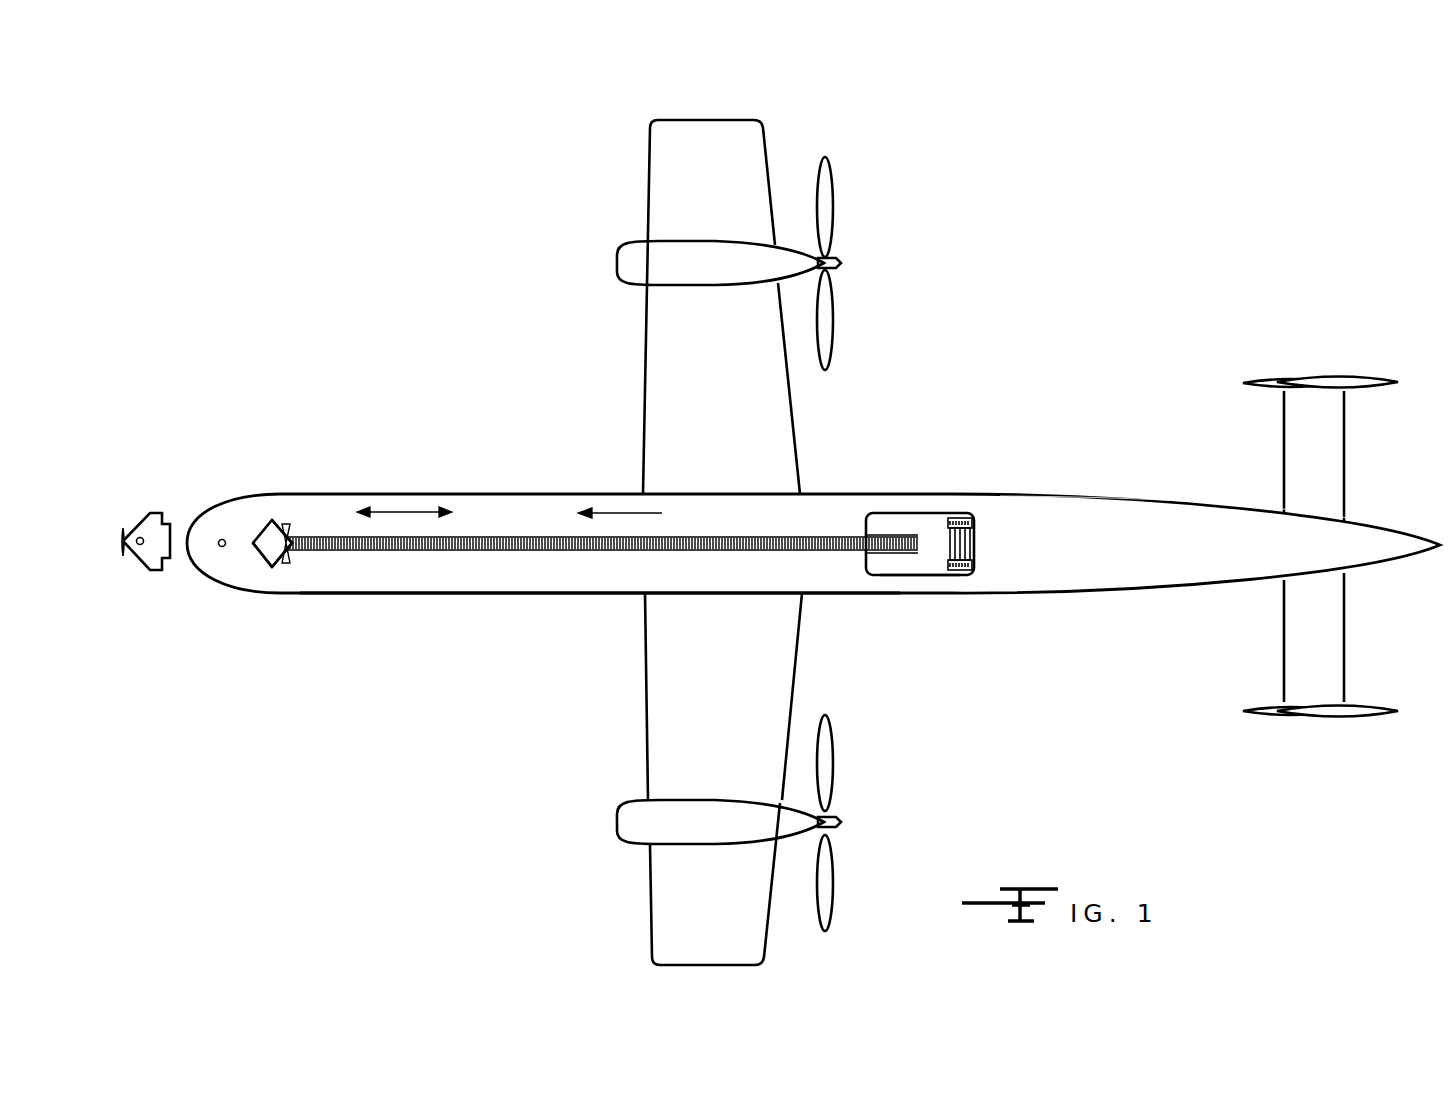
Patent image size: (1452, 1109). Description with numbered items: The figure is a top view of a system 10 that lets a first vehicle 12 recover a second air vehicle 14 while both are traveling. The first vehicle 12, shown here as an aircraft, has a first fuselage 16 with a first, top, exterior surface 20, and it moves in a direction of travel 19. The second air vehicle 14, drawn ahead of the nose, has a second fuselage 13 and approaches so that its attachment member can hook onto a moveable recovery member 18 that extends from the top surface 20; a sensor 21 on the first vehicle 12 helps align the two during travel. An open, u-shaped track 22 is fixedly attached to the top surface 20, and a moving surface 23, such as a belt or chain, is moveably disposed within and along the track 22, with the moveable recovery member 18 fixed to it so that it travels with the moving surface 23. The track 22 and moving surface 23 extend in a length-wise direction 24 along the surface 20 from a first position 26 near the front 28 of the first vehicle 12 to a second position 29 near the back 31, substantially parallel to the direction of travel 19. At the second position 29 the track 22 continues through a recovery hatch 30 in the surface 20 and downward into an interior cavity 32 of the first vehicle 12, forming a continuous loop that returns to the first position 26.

The system 10 is at (426, 452).
The first vehicle 12 is at (850, 494).
The second fuselage 13 is at (130, 537).
The second air vehicle 14 is at (147, 520).
The first fuselage 16 is at (513, 593).
The moveable recovery member 18 is at (287, 534).
The direction of travel 19 is at (622, 513).
The first, top, exterior surface 20 is at (290, 552).
The sensor 21 is at (222, 538).
The track 22 is at (502, 532).
The moving surface 23 is at (360, 552).
The length-wise direction 24 is at (402, 512).
The first position 26 is at (285, 538).
The front 28 is at (258, 560).
The second position 29 is at (862, 530).
The recovery hatch 30 is at (906, 567).
The back 31 is at (1013, 527).
The interior cavity 32 is at (933, 567).